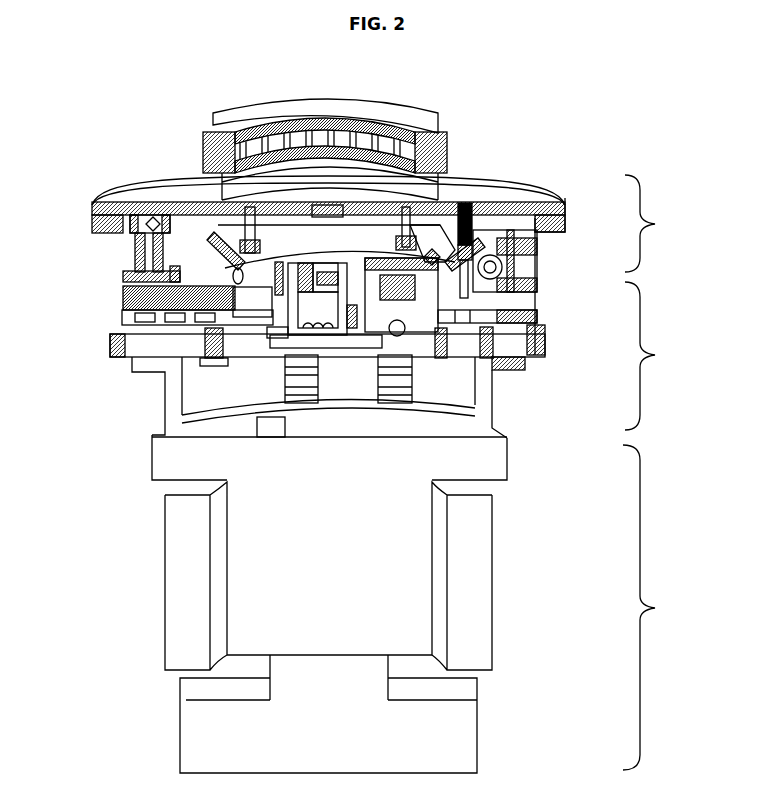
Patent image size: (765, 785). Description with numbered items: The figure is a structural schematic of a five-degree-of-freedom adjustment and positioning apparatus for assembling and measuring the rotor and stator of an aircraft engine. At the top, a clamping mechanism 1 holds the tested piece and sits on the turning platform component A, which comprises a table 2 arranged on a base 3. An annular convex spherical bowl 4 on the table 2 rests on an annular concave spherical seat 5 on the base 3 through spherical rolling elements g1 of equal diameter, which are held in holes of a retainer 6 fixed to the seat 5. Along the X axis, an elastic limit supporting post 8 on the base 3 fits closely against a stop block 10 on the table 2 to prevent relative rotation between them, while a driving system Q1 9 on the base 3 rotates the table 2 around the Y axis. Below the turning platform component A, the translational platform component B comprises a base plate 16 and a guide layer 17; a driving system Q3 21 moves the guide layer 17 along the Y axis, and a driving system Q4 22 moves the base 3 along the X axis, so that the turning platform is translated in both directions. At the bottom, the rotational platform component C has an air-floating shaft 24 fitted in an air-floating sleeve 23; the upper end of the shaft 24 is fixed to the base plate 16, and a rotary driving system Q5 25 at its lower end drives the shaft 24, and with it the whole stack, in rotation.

The clamping mechanism 1 is at (313, 105).
The table 2 is at (290, 200).
The base 3 is at (523, 297).
The annular convex spherical bowl 4 is at (422, 262).
The annular concave spherical seat 5 is at (140, 248).
The retainer 6 is at (233, 262).
The spherical rolling elements g1 is at (225, 262).
The elastic limit supporting post 8 is at (150, 276).
The driving system Q1 9 is at (520, 235).
The stop block 10 is at (92, 206).
The base plate 16 is at (528, 345).
The guide layer 17 is at (122, 317).
The driving system Q3 21 is at (290, 400).
The driving system Q4 22 is at (390, 395).
The air-floating sleeve 23 is at (187, 520).
The air-floating shaft 24 is at (393, 467).
The rotary driving system Q5 25 is at (197, 712).
The turning platform component A is at (651, 223).
The translational platform component B is at (651, 356).
The rotational platform component C is at (650, 607).